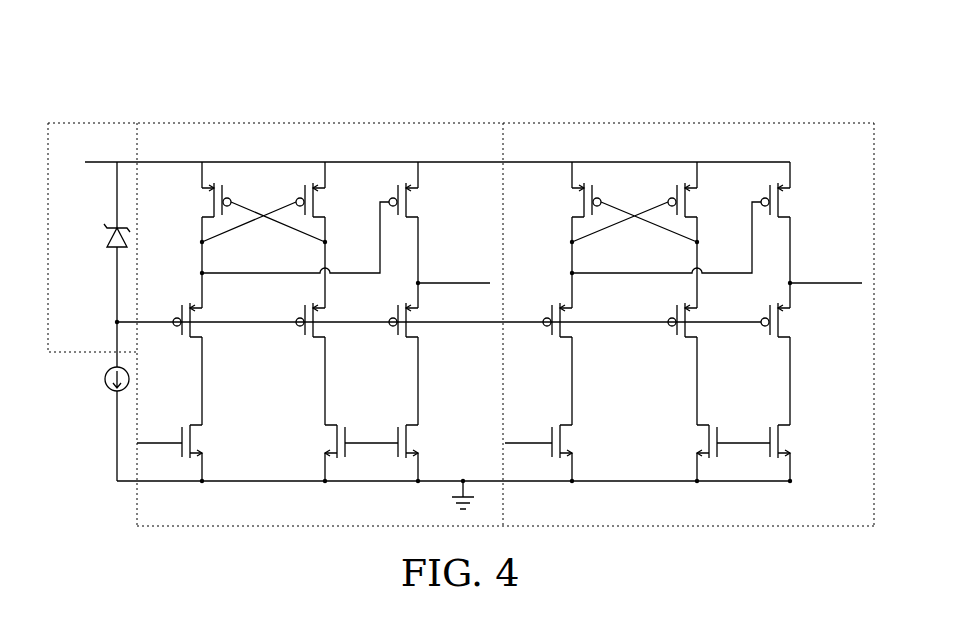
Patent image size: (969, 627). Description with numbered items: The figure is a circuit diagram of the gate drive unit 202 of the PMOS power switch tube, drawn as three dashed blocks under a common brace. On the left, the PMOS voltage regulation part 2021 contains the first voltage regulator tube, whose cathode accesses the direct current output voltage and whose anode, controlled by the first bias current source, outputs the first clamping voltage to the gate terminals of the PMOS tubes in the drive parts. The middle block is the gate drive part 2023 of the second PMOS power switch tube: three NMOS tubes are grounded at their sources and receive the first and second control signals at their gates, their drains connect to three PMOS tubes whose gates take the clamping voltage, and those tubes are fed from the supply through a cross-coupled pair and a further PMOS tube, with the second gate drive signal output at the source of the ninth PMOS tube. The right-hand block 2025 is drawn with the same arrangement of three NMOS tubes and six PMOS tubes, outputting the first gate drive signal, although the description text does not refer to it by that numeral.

The gate drive unit of the PMOS power switch tube 202 is at (708, 89).
The PMOS voltage regulation part 2021 is at (88, 123).
The gate drive part of the second PMOS power switch tube 2023 is at (305, 123).
The second comparison unit 2025 is at (688, 123).